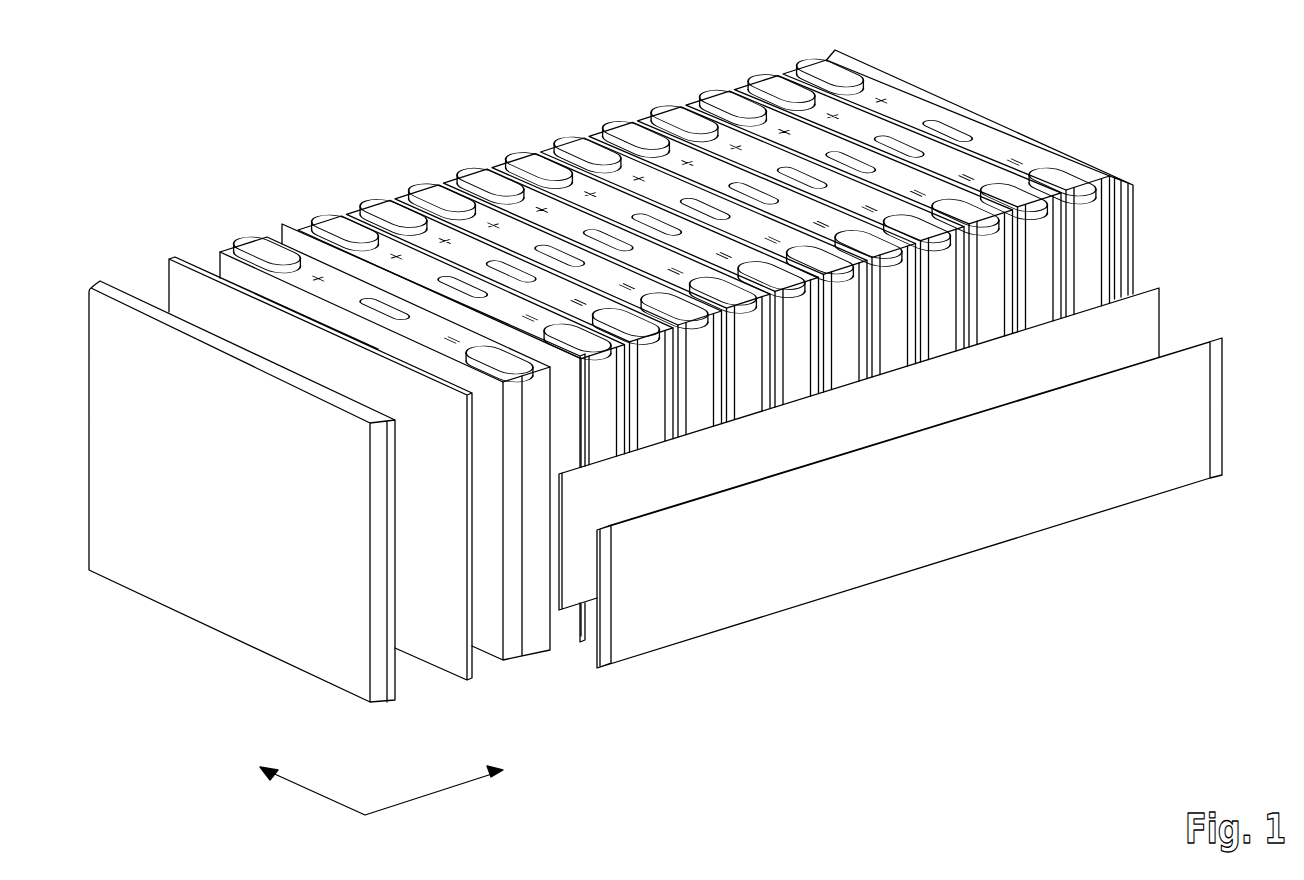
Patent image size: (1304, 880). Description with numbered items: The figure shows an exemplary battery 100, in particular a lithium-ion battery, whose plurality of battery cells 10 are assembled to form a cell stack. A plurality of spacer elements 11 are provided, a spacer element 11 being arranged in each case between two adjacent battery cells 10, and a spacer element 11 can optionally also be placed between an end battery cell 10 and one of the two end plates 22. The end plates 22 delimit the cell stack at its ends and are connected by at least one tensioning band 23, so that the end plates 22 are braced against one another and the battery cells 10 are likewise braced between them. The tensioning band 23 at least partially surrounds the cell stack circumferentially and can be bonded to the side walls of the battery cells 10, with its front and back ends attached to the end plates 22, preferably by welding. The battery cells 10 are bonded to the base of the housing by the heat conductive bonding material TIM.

The battery 100 is at (407, 112).
The battery cell 10 is at (513, 653).
The spacer element 11 is at (445, 660).
The end plate 22 is at (327, 673).
The tensioning band 23 is at (1200, 398).
The heat conductive bonding material TIM is at (1147, 322).